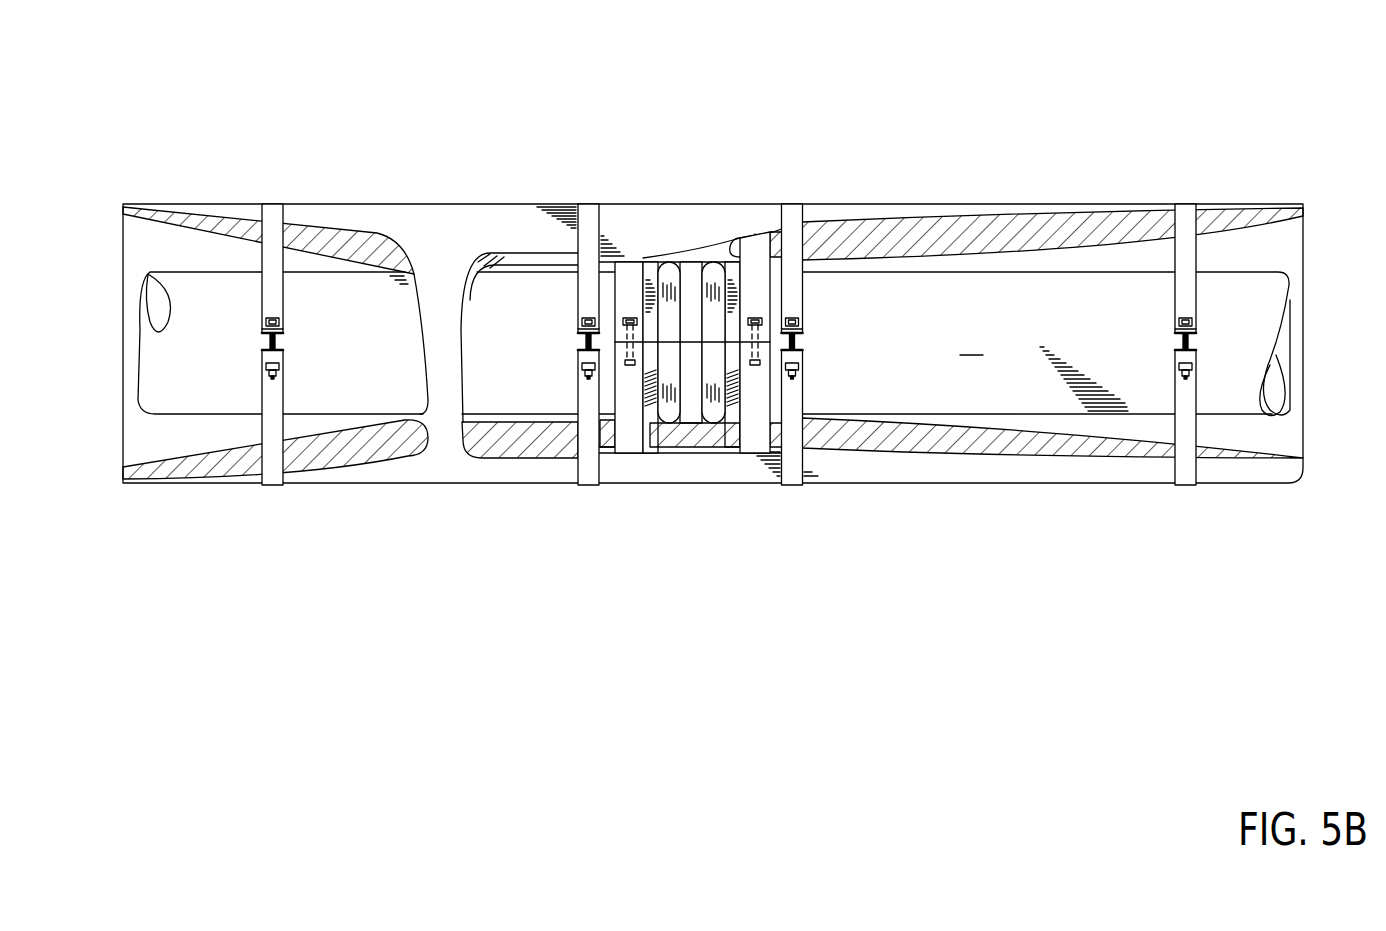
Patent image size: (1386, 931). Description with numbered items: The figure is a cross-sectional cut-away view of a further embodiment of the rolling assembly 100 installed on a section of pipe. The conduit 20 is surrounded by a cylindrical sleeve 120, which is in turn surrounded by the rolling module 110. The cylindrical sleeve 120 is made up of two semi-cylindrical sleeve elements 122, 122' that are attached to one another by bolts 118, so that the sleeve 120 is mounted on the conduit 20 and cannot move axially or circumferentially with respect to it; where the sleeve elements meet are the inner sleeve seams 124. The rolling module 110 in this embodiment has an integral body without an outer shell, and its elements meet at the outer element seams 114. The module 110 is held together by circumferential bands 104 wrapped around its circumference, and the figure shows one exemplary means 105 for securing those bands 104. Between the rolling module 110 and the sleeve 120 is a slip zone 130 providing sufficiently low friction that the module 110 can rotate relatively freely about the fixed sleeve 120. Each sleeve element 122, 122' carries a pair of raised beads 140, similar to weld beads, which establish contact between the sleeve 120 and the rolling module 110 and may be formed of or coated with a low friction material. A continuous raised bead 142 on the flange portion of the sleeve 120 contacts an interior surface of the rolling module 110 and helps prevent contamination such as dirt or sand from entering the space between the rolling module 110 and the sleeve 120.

The conduit 20 is at (713, 343).
The rolling assembly 100 is at (728, 91).
The circumferential bands 104 is at (274, 204).
The securing means 105 is at (567, 332).
The rolling module 110 is at (708, 192).
The outer element seams 114 is at (656, 343).
The bolts 118 is at (757, 328).
The cylindrical sleeve 120 is at (686, 274).
The sleeve element 122 is at (679, 264).
The sleeve element 122' is at (734, 455).
The inner sleeve seams 124 is at (741, 402).
The slip zone 130 is at (620, 455).
The raised beads 140 is at (672, 377).
The continuous raised bead 142 is at (735, 262).